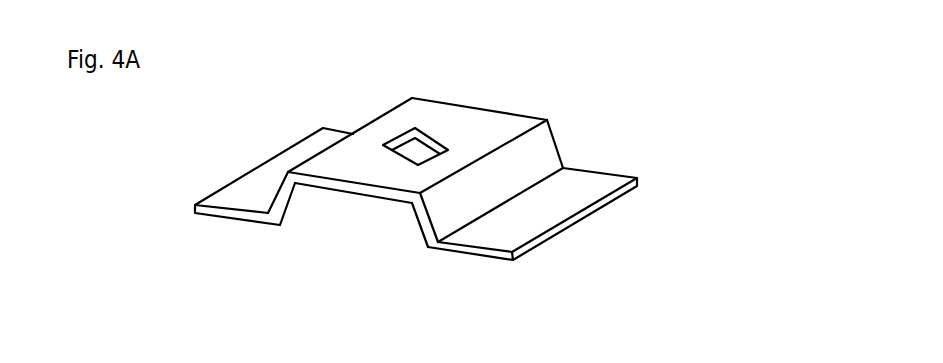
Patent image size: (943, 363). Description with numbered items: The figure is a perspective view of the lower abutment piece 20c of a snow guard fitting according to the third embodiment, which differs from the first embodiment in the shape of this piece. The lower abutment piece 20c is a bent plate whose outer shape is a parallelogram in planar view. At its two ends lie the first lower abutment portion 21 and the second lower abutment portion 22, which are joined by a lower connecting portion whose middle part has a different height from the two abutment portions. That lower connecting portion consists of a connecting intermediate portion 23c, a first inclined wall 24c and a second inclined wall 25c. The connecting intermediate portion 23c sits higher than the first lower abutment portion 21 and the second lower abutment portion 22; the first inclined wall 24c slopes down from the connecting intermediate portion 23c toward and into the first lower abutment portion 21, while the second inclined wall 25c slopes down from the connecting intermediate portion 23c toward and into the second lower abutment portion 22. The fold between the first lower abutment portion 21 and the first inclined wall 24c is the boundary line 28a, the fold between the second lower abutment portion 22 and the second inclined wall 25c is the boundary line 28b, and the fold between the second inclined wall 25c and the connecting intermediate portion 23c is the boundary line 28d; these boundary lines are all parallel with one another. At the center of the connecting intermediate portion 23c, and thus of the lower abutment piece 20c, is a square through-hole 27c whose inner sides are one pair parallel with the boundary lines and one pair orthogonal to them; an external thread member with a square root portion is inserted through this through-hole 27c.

The lower abutment piece 20c is at (673, 115).
The first lower abutment portion 21 is at (223, 198).
The second lower abutment portion 22 is at (581, 187).
The connecting intermediate portion 23c is at (475, 118).
The first inclined wall 24c is at (306, 196).
The second inclined wall 25c is at (550, 142).
The through-hole 27c is at (412, 136).
The boundary line 28a is at (363, 126).
The boundary line 28b is at (465, 168).
The boundary line 28d is at (500, 207).